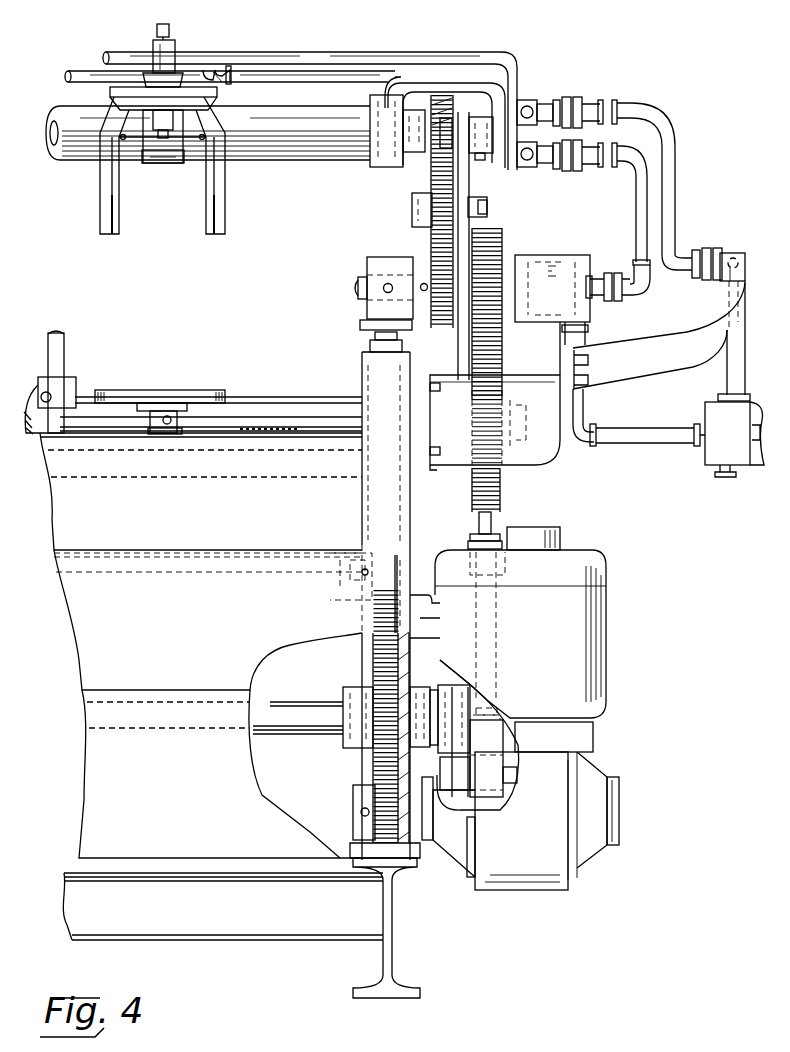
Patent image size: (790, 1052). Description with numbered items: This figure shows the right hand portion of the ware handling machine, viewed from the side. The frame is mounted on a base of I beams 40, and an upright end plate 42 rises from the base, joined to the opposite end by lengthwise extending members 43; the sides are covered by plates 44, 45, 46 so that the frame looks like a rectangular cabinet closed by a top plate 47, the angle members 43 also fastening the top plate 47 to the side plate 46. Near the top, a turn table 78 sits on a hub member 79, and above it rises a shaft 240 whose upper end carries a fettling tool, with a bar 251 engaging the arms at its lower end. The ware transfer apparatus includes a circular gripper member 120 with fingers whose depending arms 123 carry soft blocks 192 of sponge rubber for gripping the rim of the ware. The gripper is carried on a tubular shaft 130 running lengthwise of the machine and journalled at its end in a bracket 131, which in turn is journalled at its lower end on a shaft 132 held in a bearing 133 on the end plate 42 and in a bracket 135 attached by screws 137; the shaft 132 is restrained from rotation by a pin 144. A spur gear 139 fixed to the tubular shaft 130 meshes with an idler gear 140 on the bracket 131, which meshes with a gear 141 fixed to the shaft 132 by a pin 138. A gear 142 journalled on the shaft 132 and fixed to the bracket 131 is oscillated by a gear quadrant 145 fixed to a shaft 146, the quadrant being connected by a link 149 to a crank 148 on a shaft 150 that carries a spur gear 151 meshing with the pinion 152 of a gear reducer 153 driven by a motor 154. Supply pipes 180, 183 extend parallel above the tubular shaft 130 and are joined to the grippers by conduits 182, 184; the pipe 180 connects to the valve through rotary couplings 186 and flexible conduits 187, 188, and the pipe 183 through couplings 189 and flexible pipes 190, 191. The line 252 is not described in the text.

The I beam 40 is at (405, 958).
The end plate 42 is at (400, 546).
The lengthwise extending member 43 is at (205, 463).
The side plate 44 is at (220, 774).
The side plate 45 is at (208, 639).
The side plate 46 is at (201, 502).
The top plate 47 is at (130, 438).
The turn table 78 is at (219, 400).
The hub member 79 is at (175, 436).
The circular member 120 is at (163, 125).
The depending arm 123 is at (106, 210).
The tubular shaft 130 is at (282, 112).
The bracket 131 is at (470, 176).
The shaft 132 is at (358, 288).
The bearing 133 is at (367, 260).
The bracket 135 is at (509, 393).
The screw 137 is at (436, 468).
The pin 138 is at (424, 292).
The spur gear 139 is at (430, 168).
The idler gear 140 is at (420, 230).
The gear 141 is at (434, 254).
The gear 142 is at (506, 244).
The pin 144 is at (385, 292).
The gear quadrant 145 is at (503, 496).
The shaft 146 is at (270, 397).
The crank 148 is at (462, 750).
The link 149 is at (498, 662).
The shaft 150 is at (316, 710).
The spur gear 151 is at (373, 655).
The pinion 152 is at (362, 780).
The gear reducer 153 is at (520, 821).
The motor 154 is at (607, 640).
The supply pipe 180 is at (283, 58).
The conduit 182 is at (170, 36).
The supply pipe 183 is at (250, 80).
The conduit 184 is at (206, 82).
The rotary coupling 186 is at (573, 98).
The flexible conduit 187 is at (678, 168).
The flexible conduit 188 is at (736, 355).
The coupling 189 is at (570, 172).
The flexible pipe 190 is at (637, 213).
The flexible pipe 191 is at (645, 418).
The block 192 is at (214, 210).
The shaft 240 is at (66, 361).
The bar 251 is at (252, 572).
The line 252 is at (348, 593).